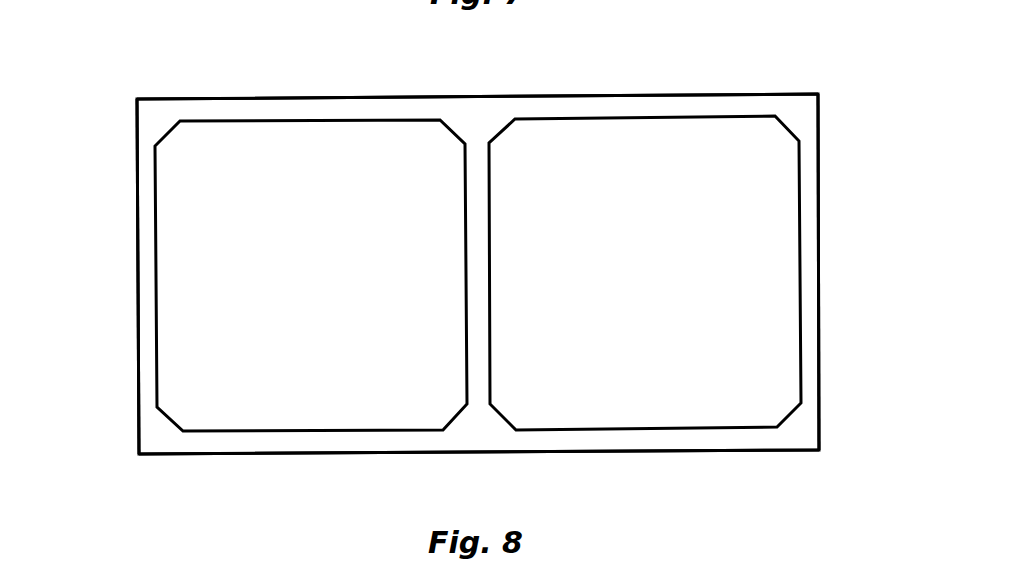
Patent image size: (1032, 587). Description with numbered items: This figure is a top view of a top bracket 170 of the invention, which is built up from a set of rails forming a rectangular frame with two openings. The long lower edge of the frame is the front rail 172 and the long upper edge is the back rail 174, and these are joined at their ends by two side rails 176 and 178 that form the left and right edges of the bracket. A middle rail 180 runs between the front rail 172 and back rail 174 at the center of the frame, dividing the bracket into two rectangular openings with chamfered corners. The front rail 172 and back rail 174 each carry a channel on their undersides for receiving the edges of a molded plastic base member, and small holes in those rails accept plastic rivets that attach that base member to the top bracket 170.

The top bracket 170 is at (749, 62).
The front rail 172 is at (412, 452).
The back rail 174 is at (253, 97).
The side rail 176 is at (137, 229).
The side rail 178 is at (820, 234).
The middle rail 180 is at (491, 280).